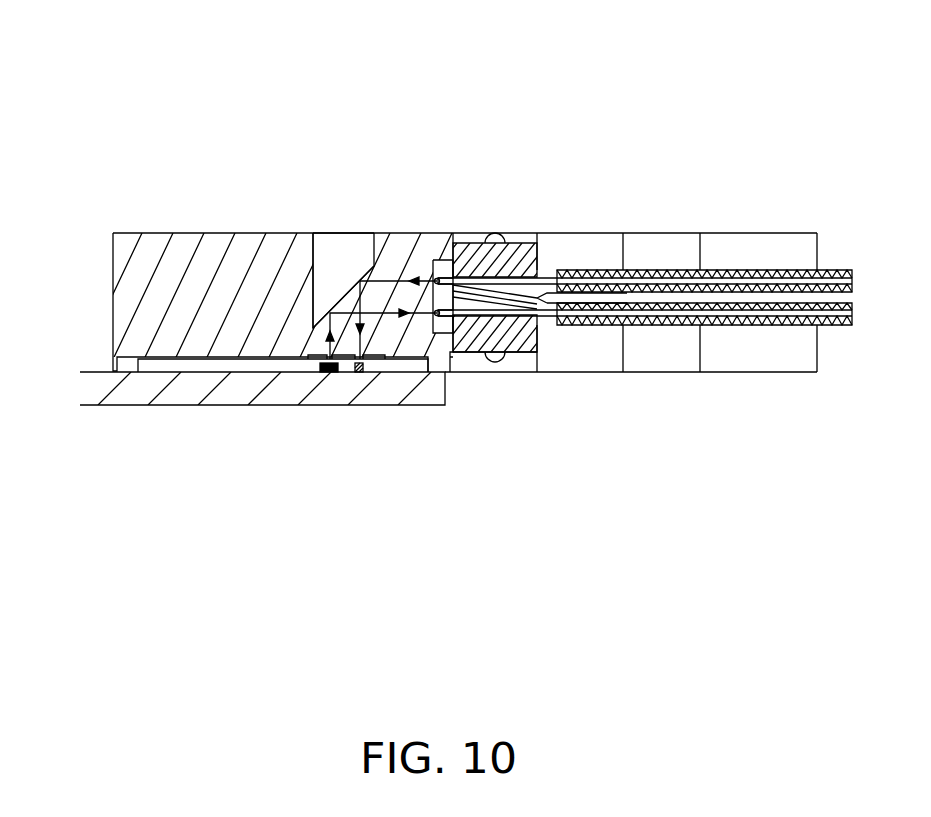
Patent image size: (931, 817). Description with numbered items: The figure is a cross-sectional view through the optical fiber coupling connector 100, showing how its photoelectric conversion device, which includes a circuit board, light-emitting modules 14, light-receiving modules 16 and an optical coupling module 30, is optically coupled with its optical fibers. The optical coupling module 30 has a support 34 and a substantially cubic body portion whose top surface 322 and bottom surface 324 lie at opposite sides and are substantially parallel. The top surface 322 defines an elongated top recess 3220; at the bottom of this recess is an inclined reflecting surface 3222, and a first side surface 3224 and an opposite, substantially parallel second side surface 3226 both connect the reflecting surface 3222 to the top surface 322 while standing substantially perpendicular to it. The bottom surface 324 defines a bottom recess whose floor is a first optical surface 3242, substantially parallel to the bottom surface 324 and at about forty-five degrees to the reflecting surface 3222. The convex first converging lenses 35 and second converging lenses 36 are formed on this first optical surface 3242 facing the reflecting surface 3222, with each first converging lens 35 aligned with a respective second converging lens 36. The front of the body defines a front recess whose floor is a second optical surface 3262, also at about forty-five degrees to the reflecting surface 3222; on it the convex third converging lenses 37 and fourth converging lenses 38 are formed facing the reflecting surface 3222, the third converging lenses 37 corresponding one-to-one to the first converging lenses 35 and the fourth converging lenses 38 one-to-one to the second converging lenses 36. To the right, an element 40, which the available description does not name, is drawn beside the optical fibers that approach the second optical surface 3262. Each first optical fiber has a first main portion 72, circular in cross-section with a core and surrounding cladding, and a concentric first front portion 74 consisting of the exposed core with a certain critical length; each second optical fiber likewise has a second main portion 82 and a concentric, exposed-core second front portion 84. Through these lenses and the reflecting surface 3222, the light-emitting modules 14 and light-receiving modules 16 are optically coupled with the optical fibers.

The optical fiber coupling connector 100 is at (442, 62).
The optical coupling module 30 is at (113, 295).
The top surface 322 is at (223, 233).
The first side surface 3224 is at (316, 250).
The top recess 3220 is at (344, 247).
The second side surface 3226 is at (370, 241).
The reflecting surface 3222 is at (381, 272).
The second optical surface 3262 is at (441, 268).
The second front portion 84 is at (546, 282).
The housing / connector body 40 is at (606, 233).
The second main portion 82 is at (758, 270).
The first main portion 72 is at (767, 325).
The first front portion 74 is at (547, 318).
The support 34 is at (131, 366).
The bottom surface 324 is at (223, 362).
The first optical surface 3242 is at (305, 362).
The light-emitting module 14 is at (330, 373).
The first converging lens 35 is at (344, 373).
The light-receiving module 16 is at (365, 373).
The second converging lens 36 is at (372, 366).
The third converging lens 37 is at (470, 357).
The fourth converging lens 38 is at (498, 362).